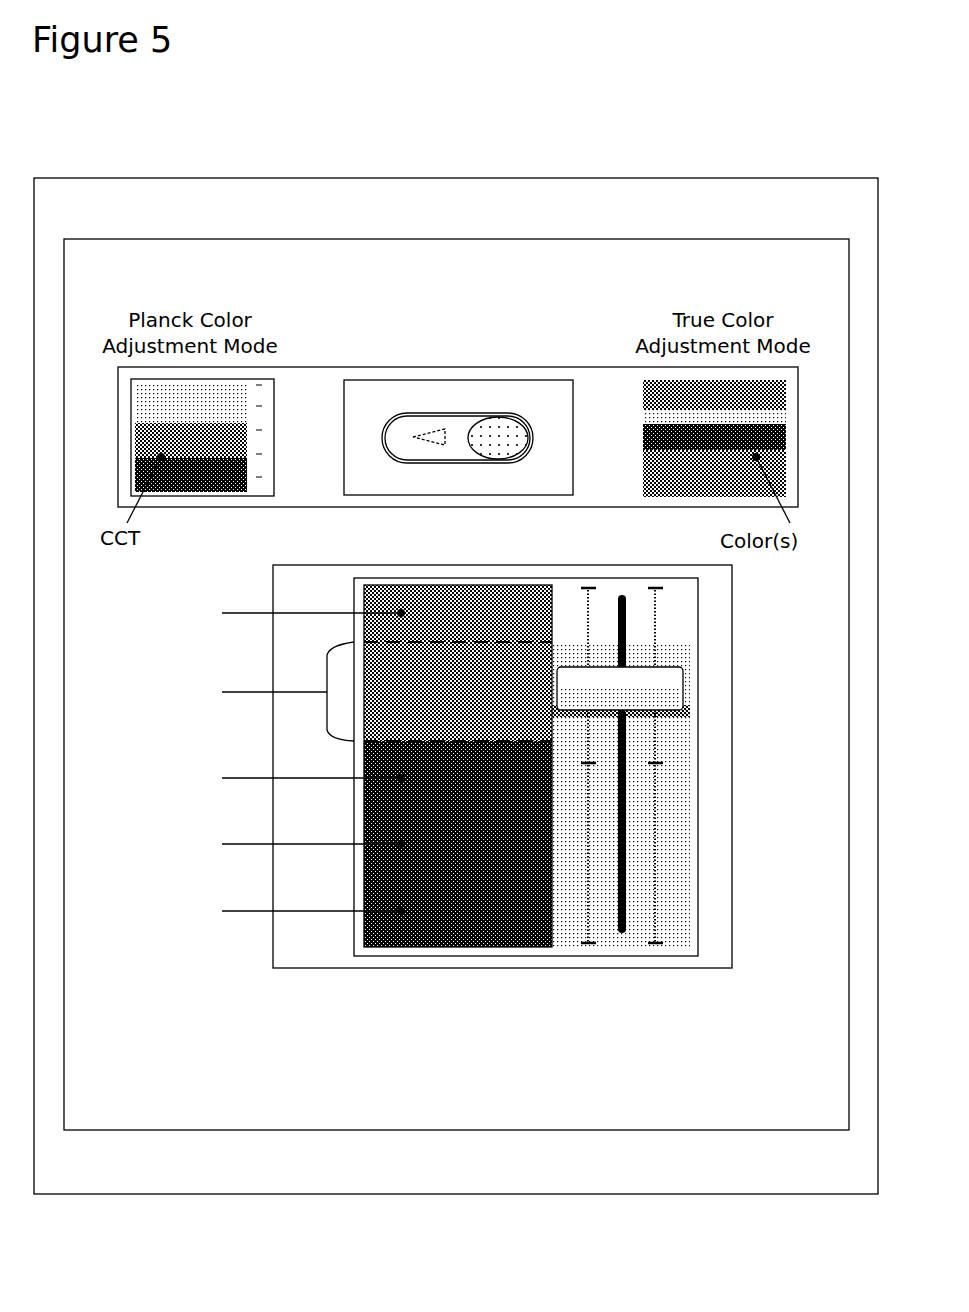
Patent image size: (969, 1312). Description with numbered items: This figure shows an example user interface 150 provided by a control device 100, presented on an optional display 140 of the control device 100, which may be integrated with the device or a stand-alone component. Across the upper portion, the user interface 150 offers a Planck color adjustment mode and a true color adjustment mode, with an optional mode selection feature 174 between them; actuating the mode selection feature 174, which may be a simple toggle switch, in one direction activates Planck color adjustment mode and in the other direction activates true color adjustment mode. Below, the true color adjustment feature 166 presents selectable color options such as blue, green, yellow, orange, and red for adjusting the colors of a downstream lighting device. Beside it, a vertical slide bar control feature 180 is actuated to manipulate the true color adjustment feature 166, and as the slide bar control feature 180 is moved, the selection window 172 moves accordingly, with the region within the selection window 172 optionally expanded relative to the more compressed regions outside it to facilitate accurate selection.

The control device 100 is at (456, 686).
The display 140 is at (456, 684).
The mode selection feature 174 is at (498, 437).
The user interface 150 is at (733, 1006).
The true color adjustment feature 166 is at (493, 948).
The selection window 172 is at (413, 742).
The slide bar control feature 180 is at (667, 700).